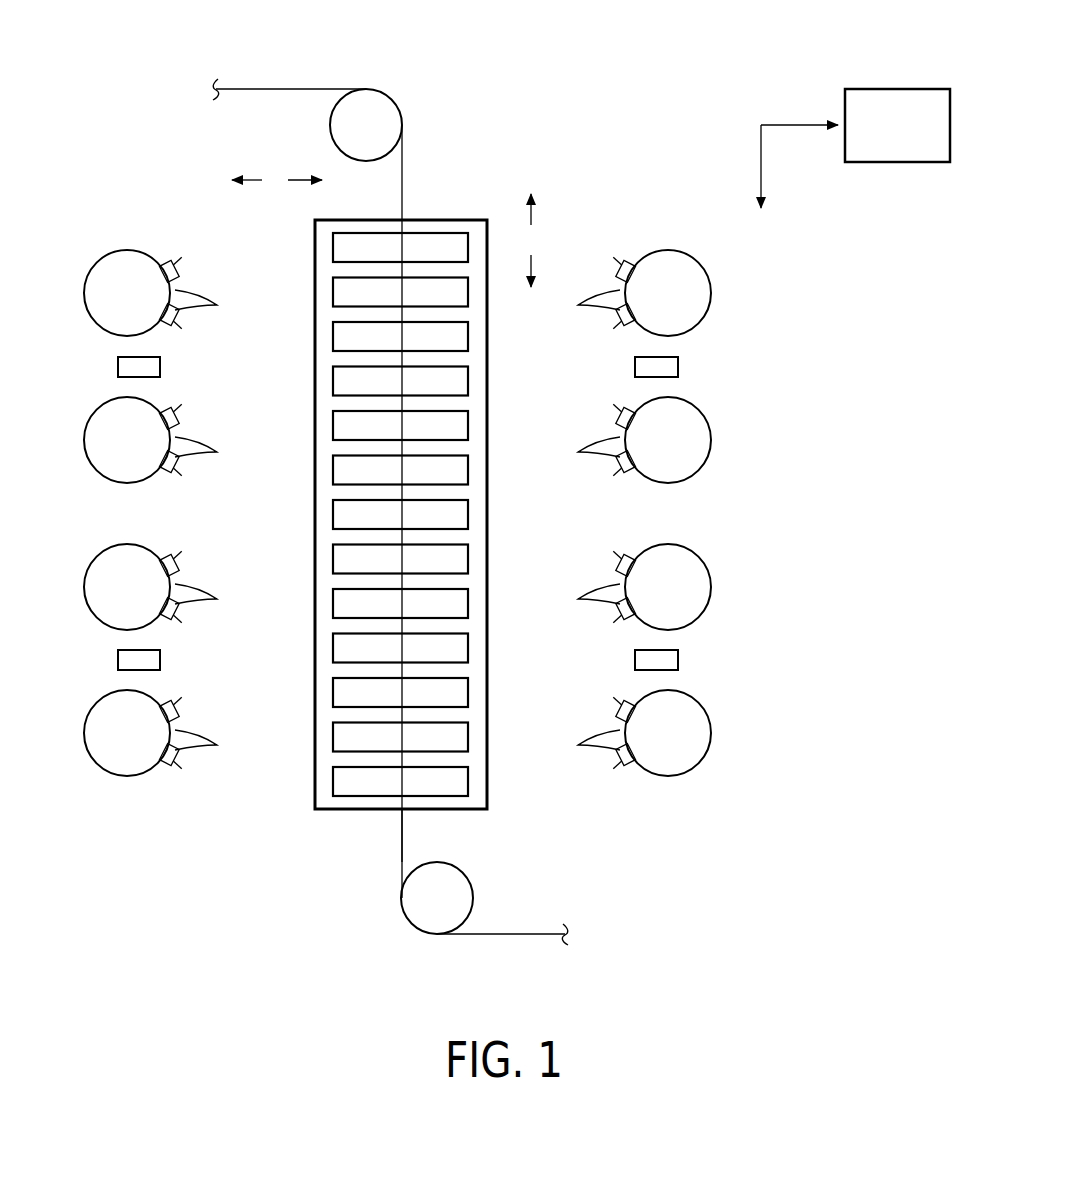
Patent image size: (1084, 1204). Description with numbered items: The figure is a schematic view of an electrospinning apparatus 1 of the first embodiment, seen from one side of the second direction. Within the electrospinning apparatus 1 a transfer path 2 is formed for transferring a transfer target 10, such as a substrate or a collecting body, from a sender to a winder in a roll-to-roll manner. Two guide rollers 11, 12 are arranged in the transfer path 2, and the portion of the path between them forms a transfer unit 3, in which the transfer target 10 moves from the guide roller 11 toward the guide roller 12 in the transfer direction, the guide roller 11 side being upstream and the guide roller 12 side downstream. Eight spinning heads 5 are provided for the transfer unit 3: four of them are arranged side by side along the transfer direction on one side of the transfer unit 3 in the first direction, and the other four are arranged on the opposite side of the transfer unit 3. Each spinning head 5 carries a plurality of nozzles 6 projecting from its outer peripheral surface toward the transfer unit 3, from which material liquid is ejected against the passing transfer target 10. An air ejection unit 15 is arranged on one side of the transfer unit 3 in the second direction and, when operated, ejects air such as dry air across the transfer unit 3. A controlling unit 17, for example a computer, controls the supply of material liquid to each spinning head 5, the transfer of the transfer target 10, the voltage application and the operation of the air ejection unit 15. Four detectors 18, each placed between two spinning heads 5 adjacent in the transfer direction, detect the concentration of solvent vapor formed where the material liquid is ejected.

The electrospinning apparatus 1 is at (588, 22).
The transfer path 2 is at (339, 57).
The transfer unit 3 is at (408, 180).
The spinning head 5 is at (99, 247).
The nozzle 6 is at (397, 512).
The transfer target 10 is at (400, 852).
The guide roller 11 is at (384, 110).
The guide roller 12 is at (427, 930).
The air ejection unit 15 is at (489, 419).
The controlling unit 17 is at (897, 88).
The detector 18 is at (163, 367).